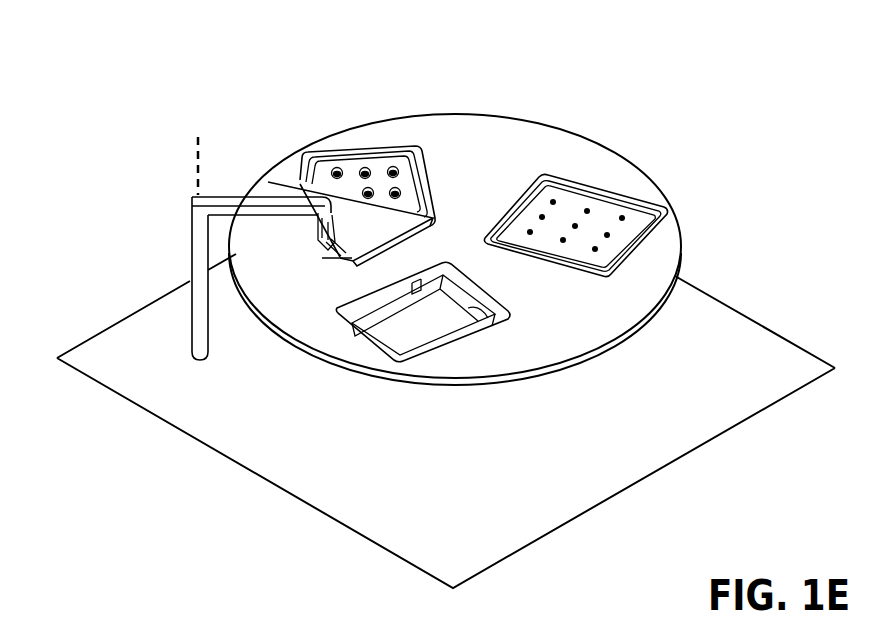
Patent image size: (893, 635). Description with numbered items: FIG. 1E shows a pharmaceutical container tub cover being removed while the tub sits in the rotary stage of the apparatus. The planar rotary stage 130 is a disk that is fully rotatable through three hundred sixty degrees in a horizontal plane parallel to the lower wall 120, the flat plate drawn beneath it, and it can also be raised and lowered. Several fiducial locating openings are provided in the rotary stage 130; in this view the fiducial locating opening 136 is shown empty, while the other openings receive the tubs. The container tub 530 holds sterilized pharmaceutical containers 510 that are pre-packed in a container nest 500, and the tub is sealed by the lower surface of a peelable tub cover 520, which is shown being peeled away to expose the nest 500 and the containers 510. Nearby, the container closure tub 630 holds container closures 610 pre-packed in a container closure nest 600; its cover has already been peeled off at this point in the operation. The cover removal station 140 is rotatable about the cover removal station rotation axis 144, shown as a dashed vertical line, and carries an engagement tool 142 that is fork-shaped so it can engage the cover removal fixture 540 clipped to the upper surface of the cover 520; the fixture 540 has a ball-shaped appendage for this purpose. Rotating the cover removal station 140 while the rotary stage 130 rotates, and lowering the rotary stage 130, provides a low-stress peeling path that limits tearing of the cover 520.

The lower wall 120 is at (640, 425).
The planar rotary stage 130 is at (540, 322).
The fiducial locating opening 136 is at (387, 350).
The cover removal station 140 is at (198, 246).
The engagement tool 142 is at (315, 233).
The cover removal station rotation axis 144 is at (195, 170).
The container nest 500 is at (327, 168).
The pharmaceutical containers 510 is at (367, 170).
The peelable tub cover 520 is at (300, 188).
The container tub 530 is at (420, 168).
The cover removal fixture 540 is at (328, 258).
The container closure nest 600 is at (605, 215).
The container closures 610 is at (623, 217).
The container closure tub 630 is at (652, 215).